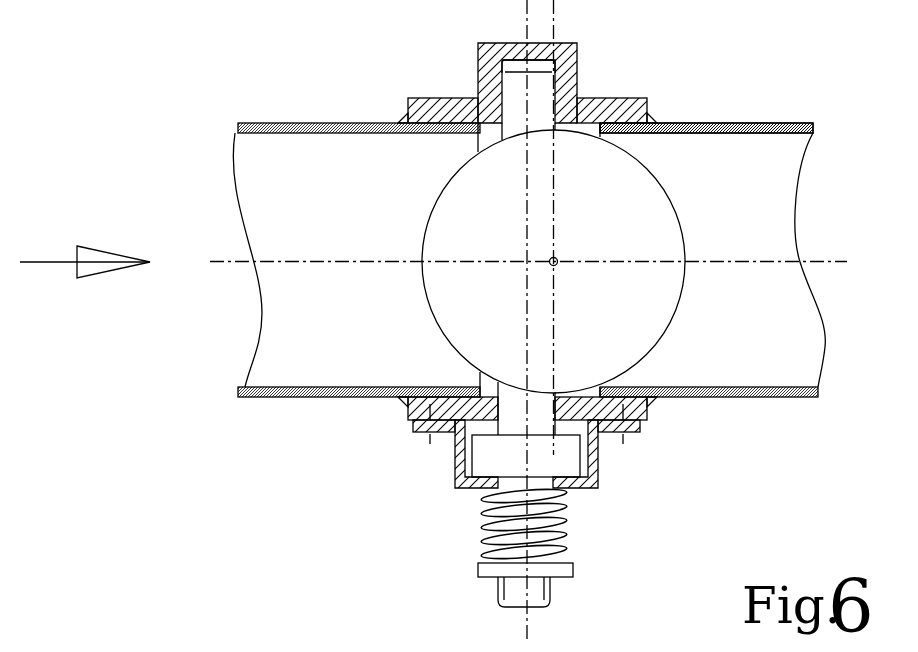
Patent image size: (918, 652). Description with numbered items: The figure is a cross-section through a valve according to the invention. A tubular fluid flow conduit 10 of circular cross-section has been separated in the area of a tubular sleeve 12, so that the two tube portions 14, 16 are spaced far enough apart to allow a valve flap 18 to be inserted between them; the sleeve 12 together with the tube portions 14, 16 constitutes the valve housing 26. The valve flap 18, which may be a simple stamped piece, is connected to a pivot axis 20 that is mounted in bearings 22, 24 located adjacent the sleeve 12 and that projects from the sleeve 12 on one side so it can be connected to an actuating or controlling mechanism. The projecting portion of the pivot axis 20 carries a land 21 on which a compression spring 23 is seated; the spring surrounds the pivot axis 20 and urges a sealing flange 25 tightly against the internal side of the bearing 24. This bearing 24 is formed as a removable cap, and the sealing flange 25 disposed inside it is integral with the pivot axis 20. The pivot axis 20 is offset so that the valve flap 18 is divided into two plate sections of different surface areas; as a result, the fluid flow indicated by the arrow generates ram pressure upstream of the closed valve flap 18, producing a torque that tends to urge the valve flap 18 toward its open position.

The tubular fluid flow conduit 10 is at (765, 157).
The tubular sleeve 12 is at (580, 107).
The tube portion 14 is at (308, 125).
The tube portion 16 is at (718, 123).
The valve flap 18 is at (537, 245).
The pivot axis 20 is at (547, 335).
The land 21 is at (575, 567).
The bearing 22 is at (485, 68).
The compression spring 23 is at (563, 518).
The bearing 24 is at (455, 462).
The sealing flange 25 is at (568, 463).
The valve housing 26 is at (348, 405).